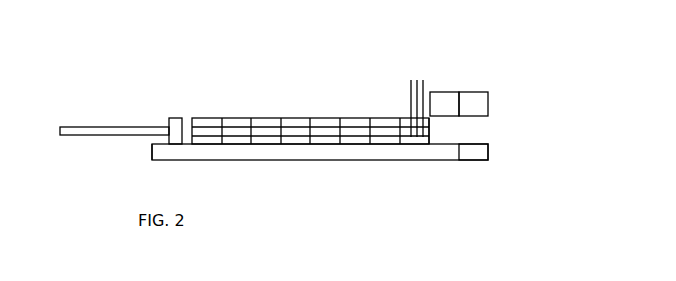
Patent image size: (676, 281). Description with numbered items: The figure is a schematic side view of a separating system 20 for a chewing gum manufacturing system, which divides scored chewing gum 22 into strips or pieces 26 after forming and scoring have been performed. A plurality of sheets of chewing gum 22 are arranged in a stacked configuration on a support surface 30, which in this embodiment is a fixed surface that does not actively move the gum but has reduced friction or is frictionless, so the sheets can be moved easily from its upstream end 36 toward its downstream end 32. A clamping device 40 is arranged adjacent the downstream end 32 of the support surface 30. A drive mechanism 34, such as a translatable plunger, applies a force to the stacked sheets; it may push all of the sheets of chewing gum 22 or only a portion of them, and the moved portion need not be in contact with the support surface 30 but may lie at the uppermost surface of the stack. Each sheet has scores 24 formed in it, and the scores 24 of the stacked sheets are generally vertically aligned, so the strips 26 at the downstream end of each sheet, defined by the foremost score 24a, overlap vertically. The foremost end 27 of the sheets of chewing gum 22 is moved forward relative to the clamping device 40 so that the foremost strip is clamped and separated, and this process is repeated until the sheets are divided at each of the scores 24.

The separating system 20 is at (205, 62).
The chewing gum 22 is at (248, 135).
The scores 24 is at (283, 140).
The foremost score 24a is at (400, 119).
The strips or pieces 26 is at (287, 190).
The foremost end 27 is at (430, 144).
The support surface 30 is at (380, 150).
The downstream end 32 is at (460, 145).
The drive mechanism 34 is at (176, 125).
The upstream end 36 is at (152, 157).
The clamping device 40 is at (460, 88).